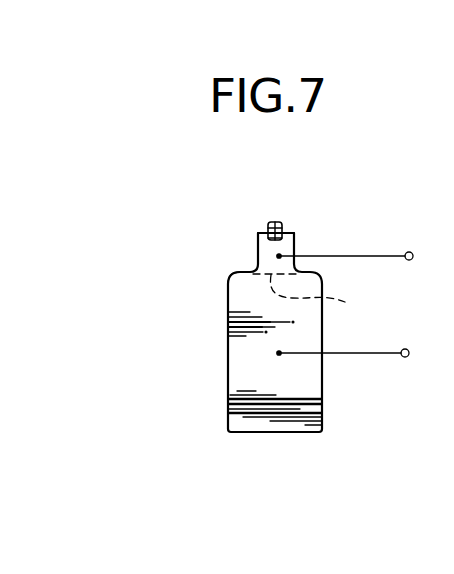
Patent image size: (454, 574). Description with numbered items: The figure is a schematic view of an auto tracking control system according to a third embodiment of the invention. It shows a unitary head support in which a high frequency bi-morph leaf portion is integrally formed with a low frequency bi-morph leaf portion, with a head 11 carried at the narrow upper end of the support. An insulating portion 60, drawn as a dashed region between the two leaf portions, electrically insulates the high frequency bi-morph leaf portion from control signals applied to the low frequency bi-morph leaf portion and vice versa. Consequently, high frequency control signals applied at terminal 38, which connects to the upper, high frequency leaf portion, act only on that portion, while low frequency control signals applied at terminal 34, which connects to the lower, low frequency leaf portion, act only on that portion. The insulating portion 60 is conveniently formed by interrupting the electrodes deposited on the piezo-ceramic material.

The cap 11 is at (276, 221).
The terminal 38 is at (411, 252).
The terminal 34 is at (407, 349).
The insulating portion 60 is at (316, 295).